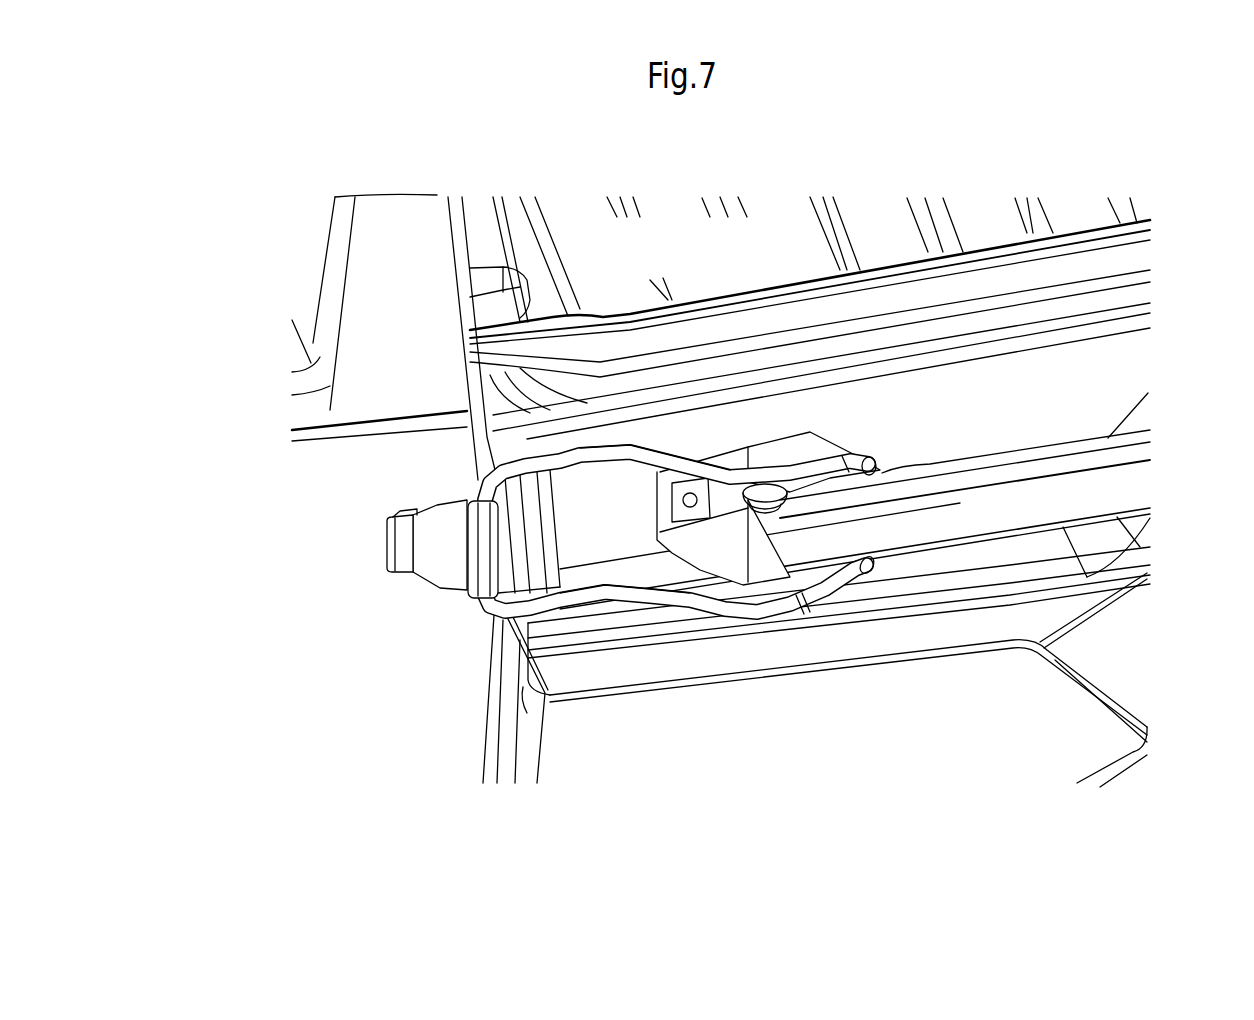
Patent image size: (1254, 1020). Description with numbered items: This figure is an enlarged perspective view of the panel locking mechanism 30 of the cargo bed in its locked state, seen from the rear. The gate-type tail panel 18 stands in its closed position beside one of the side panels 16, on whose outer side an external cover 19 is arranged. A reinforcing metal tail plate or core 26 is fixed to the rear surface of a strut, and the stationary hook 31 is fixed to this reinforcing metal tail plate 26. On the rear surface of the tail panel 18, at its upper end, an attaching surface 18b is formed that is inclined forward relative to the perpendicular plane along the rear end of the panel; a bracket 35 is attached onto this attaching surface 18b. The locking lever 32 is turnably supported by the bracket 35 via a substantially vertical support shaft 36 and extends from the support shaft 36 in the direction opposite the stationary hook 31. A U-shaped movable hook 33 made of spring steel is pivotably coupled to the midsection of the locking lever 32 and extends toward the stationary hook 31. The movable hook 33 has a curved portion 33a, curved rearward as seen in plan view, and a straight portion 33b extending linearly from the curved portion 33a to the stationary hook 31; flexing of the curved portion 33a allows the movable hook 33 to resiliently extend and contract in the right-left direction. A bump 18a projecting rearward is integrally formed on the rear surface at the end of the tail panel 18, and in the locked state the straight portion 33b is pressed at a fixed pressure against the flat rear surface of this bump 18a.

The side panel 16 is at (332, 408).
The tail panel 18 is at (1035, 397).
The bump 18a is at (530, 445).
The attaching surface 18b is at (713, 437).
The external cover 19 is at (348, 483).
The reinforcing metal tail plate 26 is at (387, 550).
The panel locking mechanism 30 is at (885, 647).
The stationary hook 31 is at (443, 550).
The locking lever 32 is at (958, 517).
The movable hook 33 is at (780, 643).
The curved portion 33a is at (738, 620).
The straight portion 33b is at (556, 604).
The bracket 35 is at (800, 430).
The support shaft 36 is at (762, 485).